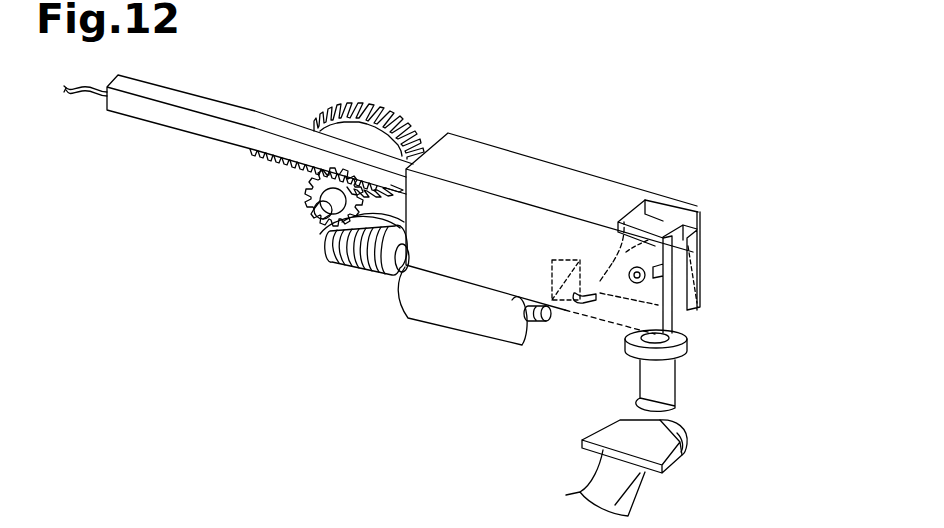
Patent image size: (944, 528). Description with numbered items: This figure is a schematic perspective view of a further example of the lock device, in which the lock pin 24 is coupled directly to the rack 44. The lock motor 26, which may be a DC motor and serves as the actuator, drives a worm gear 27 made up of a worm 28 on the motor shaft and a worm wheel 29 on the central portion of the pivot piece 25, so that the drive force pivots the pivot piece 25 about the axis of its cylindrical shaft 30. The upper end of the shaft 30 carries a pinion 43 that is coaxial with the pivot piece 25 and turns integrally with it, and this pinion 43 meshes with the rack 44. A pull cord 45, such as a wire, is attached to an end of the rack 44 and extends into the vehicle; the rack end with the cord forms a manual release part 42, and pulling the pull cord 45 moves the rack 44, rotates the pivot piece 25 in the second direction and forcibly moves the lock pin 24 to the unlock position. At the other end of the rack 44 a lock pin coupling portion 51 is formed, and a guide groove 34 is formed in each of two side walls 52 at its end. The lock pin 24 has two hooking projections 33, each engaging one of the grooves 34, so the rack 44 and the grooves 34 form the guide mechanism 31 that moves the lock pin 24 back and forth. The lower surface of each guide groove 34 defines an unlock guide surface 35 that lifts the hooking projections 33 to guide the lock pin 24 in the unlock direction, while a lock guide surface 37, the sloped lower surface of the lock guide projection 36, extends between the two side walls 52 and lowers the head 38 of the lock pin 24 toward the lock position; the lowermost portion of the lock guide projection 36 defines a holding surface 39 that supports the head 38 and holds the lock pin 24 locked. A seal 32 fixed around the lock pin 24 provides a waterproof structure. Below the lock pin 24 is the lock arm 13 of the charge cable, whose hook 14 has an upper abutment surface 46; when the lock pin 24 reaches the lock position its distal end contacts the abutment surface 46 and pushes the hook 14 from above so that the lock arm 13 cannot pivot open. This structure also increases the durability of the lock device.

The lock arm 13 is at (643, 490).
The hook 14 is at (692, 450).
The lock pin 24 is at (680, 385).
The pivot piece 25 is at (400, 118).
The lock motor 26 is at (470, 332).
The worm gear 27 is at (262, 238).
The worm 28 is at (347, 267).
The worm wheel 29 is at (312, 222).
The shaft 30 is at (318, 208).
The guide mechanism 31 is at (741, 182).
The seal 32 is at (690, 339).
The hooking projection 33 is at (626, 225).
The guide groove 34 is at (590, 312).
The unlock guide surface 35 is at (604, 318).
The lock guide projection 36 is at (626, 252).
The lock guide surface 37 is at (630, 270).
The head 38 is at (676, 213).
The holding surface 39 is at (551, 267).
The sensor 42 is at (80, 76).
The pinion 43 is at (367, 225).
The rack 44 is at (260, 116).
The pull cord 45 is at (78, 96).
The abutment surface 46 is at (688, 430).
The lock pin coupling portion 51 is at (575, 170).
The side walls 52 is at (640, 320).